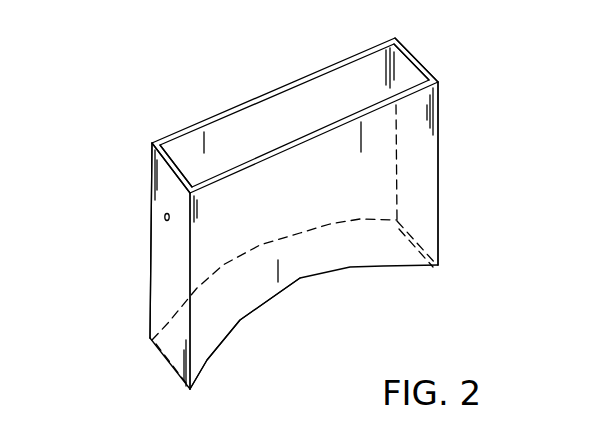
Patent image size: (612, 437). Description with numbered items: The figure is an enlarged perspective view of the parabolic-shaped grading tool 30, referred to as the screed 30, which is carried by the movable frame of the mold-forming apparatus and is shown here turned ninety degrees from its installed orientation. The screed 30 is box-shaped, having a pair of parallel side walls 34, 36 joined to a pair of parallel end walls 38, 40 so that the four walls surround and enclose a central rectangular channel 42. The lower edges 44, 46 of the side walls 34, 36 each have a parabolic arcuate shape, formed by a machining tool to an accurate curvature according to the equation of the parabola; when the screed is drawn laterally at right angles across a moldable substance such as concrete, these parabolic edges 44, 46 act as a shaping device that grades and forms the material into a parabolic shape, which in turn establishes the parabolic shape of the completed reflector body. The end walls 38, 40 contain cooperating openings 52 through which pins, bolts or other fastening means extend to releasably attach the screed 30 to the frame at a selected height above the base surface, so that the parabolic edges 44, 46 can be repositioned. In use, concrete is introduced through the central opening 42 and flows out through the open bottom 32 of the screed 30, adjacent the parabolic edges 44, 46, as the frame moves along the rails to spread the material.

The grading tool 30 is at (438, 162).
The open bottom 32 is at (297, 293).
The side wall 34 is at (275, 168).
The side wall 36 is at (222, 110).
The end wall 38 is at (157, 282).
The end wall 40 is at (418, 61).
The central rectangular channel 42 is at (187, 158).
The lower edge 44 is at (345, 272).
The lower edge 46 is at (335, 220).
The opening 52 is at (164, 221).